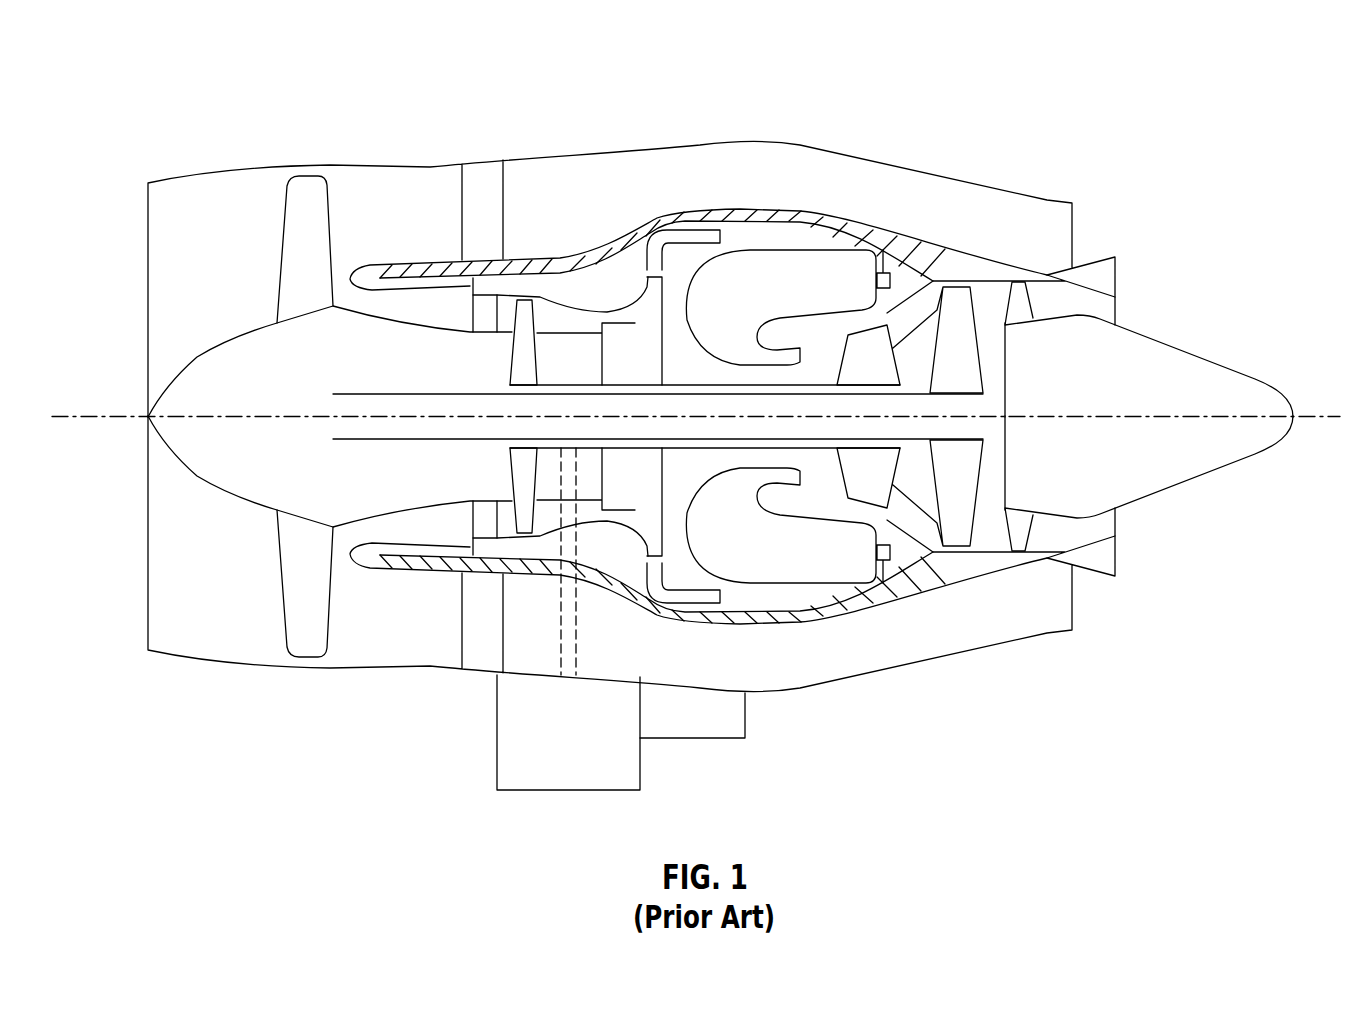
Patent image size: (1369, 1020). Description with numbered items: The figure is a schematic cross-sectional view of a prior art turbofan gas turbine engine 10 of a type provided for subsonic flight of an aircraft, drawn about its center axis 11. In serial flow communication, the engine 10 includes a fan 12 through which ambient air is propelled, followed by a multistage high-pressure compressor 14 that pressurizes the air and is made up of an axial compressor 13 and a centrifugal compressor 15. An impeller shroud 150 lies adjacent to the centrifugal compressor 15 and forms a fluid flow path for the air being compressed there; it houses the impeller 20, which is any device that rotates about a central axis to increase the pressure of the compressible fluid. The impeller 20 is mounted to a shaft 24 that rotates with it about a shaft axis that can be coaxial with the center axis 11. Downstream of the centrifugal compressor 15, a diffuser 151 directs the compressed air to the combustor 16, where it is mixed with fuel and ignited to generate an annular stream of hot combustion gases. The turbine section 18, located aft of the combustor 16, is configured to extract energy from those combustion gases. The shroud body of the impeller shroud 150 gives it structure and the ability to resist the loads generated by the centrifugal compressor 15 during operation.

The turbofan gas turbine engine 10 is at (1023, 53).
The center axis 11 is at (1326, 412).
The fan 12 is at (305, 590).
The axial compressor 13 is at (517, 260).
The multistage high-pressure compressor 14 is at (562, 323).
The centrifugal compressor 15 is at (640, 333).
The impeller shroud 150 is at (648, 270).
The diffuser 151 is at (678, 243).
The combustor 16 is at (800, 273).
The turbine section 18 is at (918, 490).
The impeller 20 is at (640, 527).
The shaft 24 is at (640, 508).